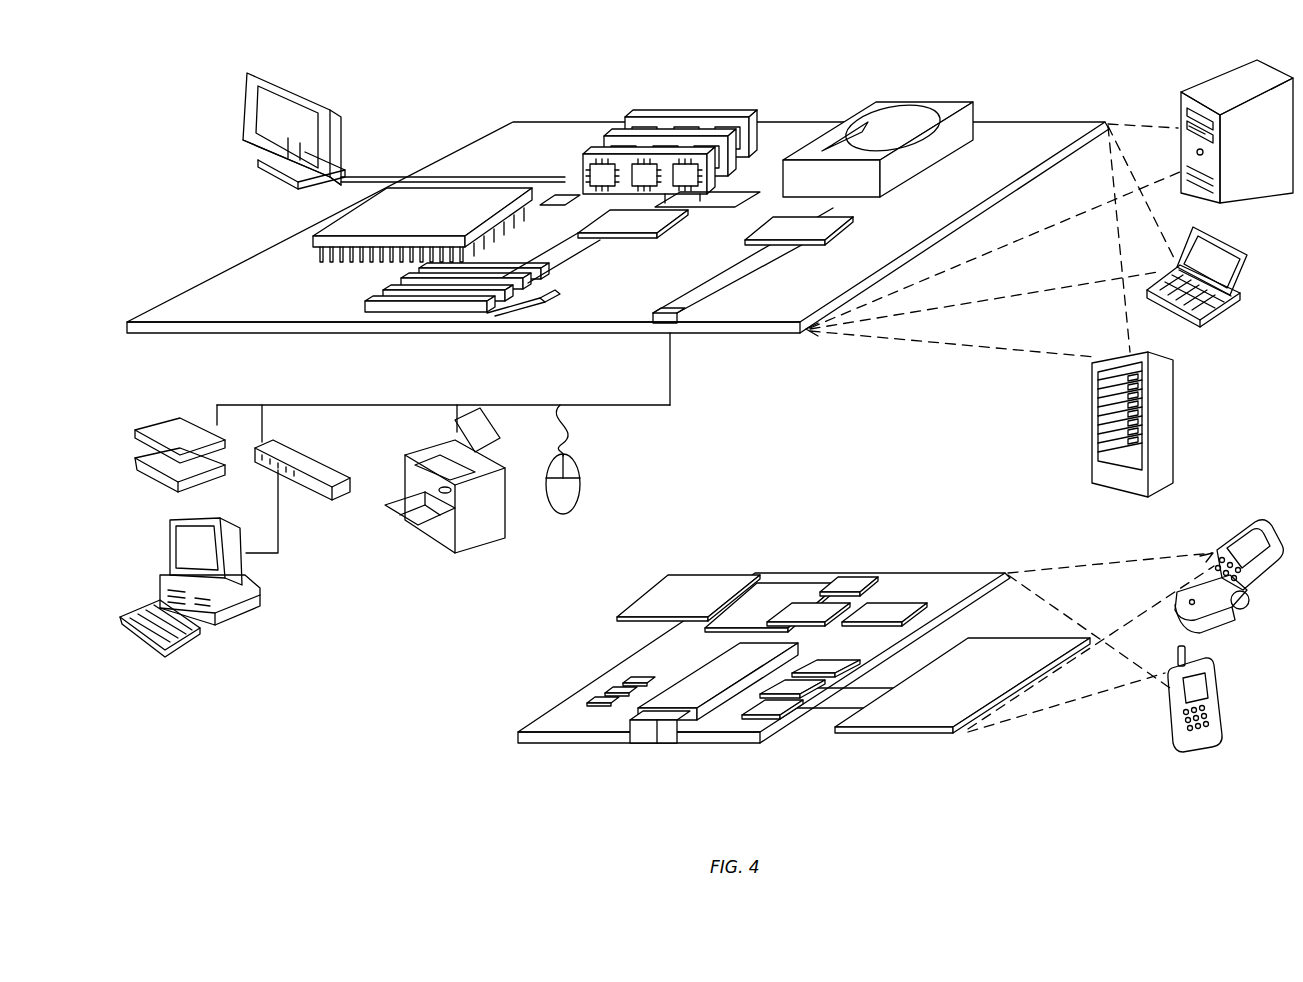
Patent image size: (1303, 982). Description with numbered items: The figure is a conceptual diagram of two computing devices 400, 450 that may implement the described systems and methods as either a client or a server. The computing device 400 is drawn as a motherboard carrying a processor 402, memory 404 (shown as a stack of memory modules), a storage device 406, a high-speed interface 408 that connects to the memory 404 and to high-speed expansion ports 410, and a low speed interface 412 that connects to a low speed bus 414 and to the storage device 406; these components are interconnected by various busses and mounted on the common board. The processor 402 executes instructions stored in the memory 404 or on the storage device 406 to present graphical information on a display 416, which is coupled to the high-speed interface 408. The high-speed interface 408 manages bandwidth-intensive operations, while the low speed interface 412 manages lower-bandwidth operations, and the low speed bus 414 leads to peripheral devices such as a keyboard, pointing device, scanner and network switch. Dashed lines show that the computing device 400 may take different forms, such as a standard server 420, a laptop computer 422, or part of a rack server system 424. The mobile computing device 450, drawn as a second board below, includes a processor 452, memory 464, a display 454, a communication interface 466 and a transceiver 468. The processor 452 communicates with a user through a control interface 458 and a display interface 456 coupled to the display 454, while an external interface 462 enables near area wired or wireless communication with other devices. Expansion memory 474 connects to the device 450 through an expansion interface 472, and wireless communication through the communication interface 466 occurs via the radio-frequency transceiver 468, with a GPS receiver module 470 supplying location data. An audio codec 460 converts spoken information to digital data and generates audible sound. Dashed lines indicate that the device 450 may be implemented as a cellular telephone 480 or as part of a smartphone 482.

The computing device 400 is at (439, 101).
The processor 402 is at (313, 237).
The memory 404 is at (636, 90).
The storage device 406 is at (862, 102).
The high-speed interface 408 is at (612, 221).
The high-speed expansion ports 410 is at (385, 298).
The low speed interface 412 is at (785, 224).
The low speed bus 414 is at (677, 322).
The display 416 is at (246, 72).
The standard server 420 is at (1181, 107).
The laptop computer 422 is at (1250, 252).
The rack server system 424 is at (1092, 448).
The mobile computing device 450 is at (495, 741).
The processor 452 is at (690, 712).
The display 454 is at (925, 718).
The display interface 456 is at (760, 712).
The control interface 458 is at (787, 690).
The audio codec 460 is at (815, 668).
The external interface 462 is at (657, 743).
The memory 464 is at (603, 690).
The communication interface 466 is at (810, 612).
The transceiver 468 is at (890, 612).
The GPS receiver module 470 is at (855, 585).
The expansion interface 472 is at (743, 590).
The expansion memory 474 is at (667, 587).
The cellular telephone 480 is at (1226, 530).
The smartphone 482 is at (1172, 703).